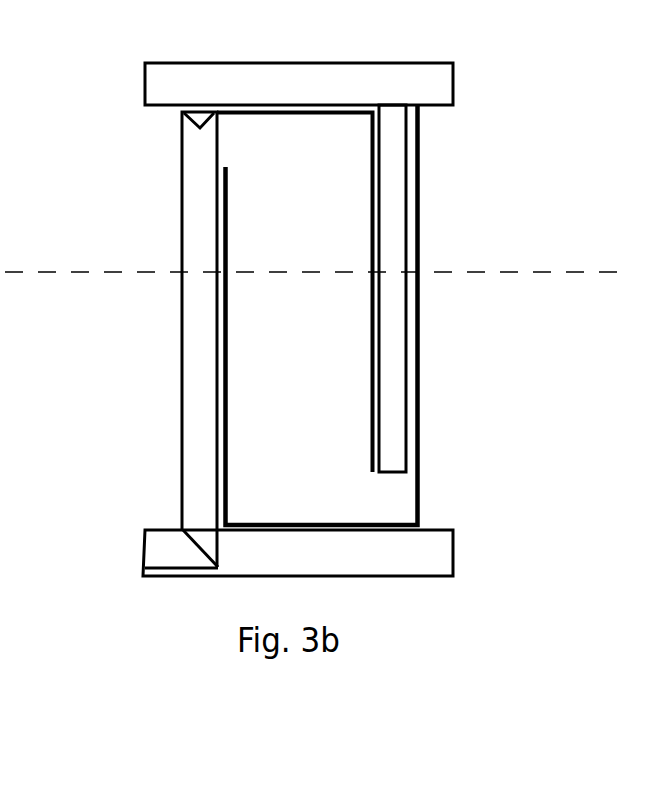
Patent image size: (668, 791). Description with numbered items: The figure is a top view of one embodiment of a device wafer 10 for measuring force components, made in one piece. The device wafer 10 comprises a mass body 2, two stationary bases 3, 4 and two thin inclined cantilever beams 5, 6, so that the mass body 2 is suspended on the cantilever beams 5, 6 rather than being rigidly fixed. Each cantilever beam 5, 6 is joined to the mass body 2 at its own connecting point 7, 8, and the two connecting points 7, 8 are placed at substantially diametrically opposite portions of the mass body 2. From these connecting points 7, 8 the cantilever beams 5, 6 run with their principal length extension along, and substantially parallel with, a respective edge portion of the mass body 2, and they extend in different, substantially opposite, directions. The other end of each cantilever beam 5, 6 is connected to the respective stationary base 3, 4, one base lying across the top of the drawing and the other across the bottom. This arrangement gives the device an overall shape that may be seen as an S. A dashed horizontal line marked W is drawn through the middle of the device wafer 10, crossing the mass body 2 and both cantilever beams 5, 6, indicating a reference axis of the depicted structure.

The mass body 2 is at (332, 245).
The stationary base 3 is at (353, 550).
The stationary base 4 is at (312, 80).
The cantilever beam 5 is at (197, 340).
The cantilever beam 6 is at (405, 328).
The connecting point 7 is at (217, 148).
The connecting point 8 is at (393, 472).
The device wafer 10 is at (518, 149).
The axis W is at (336, 274).